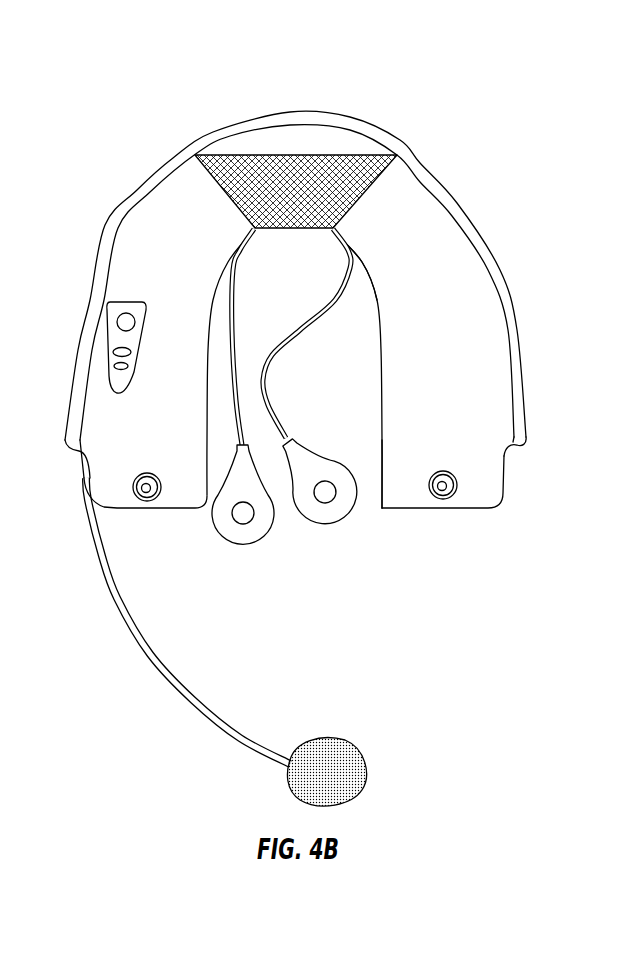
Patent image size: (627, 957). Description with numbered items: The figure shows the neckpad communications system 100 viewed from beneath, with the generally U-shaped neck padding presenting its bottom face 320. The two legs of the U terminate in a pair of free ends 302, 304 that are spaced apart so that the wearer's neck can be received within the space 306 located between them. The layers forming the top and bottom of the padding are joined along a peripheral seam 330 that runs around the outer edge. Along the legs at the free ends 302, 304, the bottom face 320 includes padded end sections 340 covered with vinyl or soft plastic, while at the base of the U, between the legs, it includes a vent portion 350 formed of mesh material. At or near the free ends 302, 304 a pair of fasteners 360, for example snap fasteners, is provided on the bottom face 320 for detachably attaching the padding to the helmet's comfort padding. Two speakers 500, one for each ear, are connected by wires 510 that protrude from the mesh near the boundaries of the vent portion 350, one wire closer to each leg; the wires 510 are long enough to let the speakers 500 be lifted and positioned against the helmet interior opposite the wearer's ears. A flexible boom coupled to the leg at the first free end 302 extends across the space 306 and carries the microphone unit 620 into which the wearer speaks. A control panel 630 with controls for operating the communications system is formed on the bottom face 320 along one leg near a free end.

The neckpad communications system 100 is at (319, 102).
The peripheral seam 330 is at (188, 146).
The vent portion 350 is at (353, 166).
The end section 340 is at (517, 406).
The control panel 630 is at (116, 300).
The wire 510 is at (305, 319).
The space 306 is at (324, 341).
The bottom face 320 is at (473, 357).
The first free end 302 is at (112, 495).
The second free end 304 is at (480, 493).
The fastener 360 is at (147, 501).
The speaker 500 is at (255, 545).
The microphone unit 620 is at (338, 737).